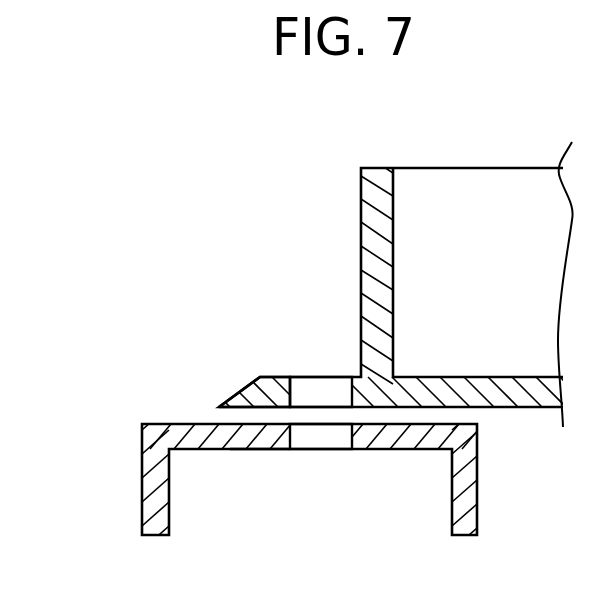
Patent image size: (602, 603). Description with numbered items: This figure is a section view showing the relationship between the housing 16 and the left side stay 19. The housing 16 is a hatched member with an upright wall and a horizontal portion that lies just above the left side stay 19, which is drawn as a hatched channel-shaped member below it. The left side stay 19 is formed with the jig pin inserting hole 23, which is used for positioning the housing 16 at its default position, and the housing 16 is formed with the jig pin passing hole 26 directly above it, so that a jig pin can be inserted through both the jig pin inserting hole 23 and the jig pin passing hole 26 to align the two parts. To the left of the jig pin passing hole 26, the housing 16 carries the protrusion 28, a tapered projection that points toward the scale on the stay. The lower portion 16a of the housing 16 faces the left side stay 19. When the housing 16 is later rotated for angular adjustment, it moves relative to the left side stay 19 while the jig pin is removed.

The housing 16 is at (527, 408).
The lower wall of frame member 16a is at (262, 450).
The left side stay 19 is at (160, 424).
The jig pin inserting hole 23 is at (323, 450).
The jig pin passing hole 26 is at (322, 376).
The protrusion 28 is at (245, 400).